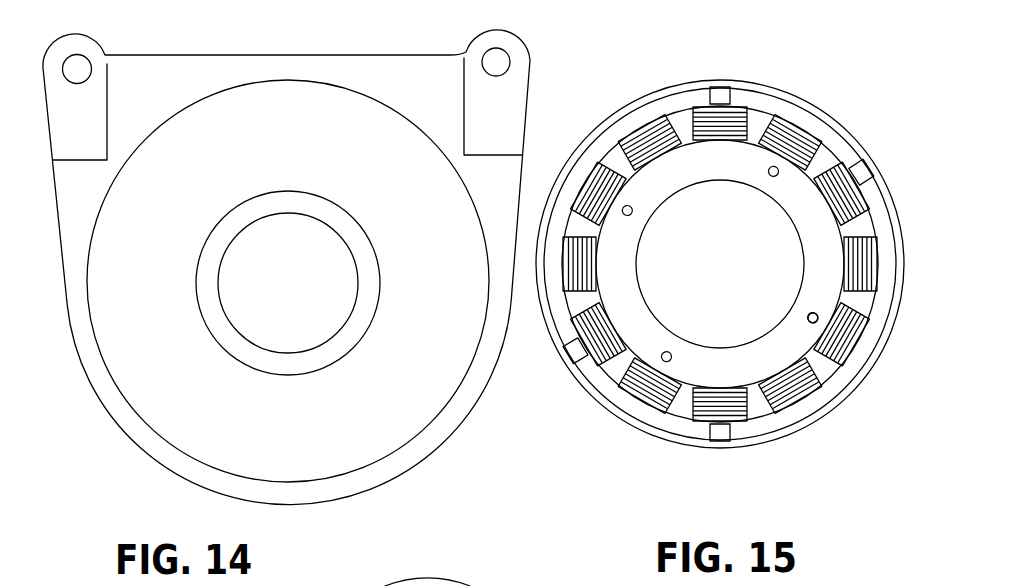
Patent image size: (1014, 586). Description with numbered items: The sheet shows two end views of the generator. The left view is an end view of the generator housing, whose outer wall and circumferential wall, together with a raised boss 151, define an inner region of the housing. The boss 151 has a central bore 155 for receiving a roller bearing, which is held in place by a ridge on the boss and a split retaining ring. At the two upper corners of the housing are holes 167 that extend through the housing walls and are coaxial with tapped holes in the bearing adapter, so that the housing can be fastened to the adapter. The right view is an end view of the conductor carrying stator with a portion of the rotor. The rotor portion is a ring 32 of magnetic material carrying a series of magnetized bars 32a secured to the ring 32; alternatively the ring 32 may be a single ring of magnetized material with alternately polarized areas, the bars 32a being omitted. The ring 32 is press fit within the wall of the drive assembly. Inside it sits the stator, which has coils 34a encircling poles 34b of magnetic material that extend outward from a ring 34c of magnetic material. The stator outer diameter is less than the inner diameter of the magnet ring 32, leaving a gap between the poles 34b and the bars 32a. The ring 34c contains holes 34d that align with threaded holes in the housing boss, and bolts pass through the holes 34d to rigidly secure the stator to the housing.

In FIG. 14, the raised boss 151 is at (313, 205).
In FIG. 14, the bore 155 is at (232, 293).
In FIG. 14, the holes 167 is at (503, 61).
In FIG. 15, the ring 32 is at (593, 140).
In FIG. 15, the magnetized bars 32a is at (778, 422).
In FIG. 15, the coils 34a is at (848, 338).
In FIG. 15, the poles 34b is at (830, 165).
In FIG. 15, the ring 34c is at (693, 367).
In FIG. 15, the holes 34d is at (808, 324).